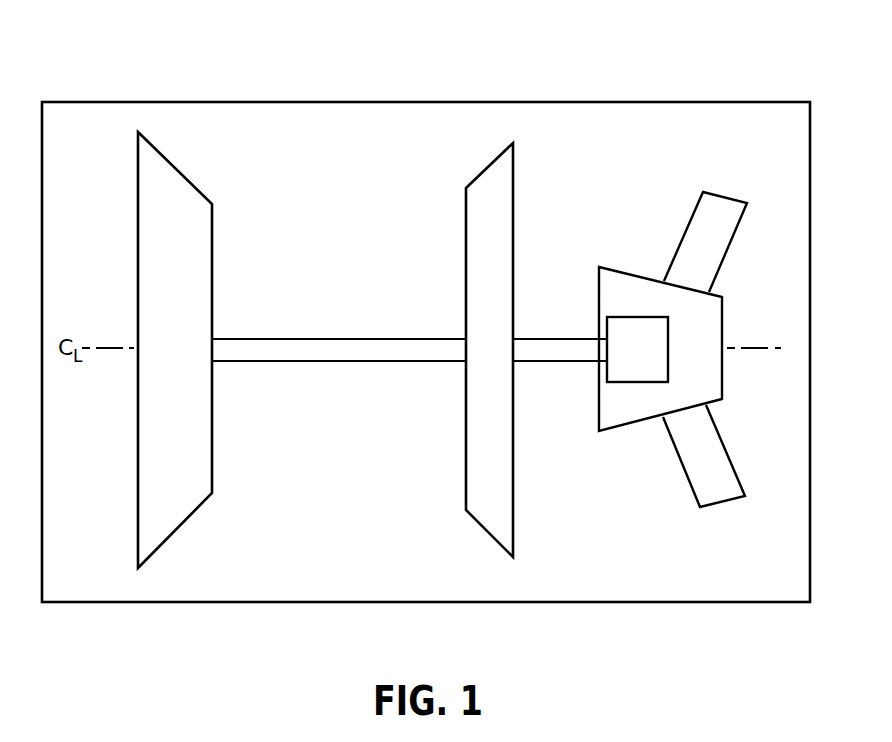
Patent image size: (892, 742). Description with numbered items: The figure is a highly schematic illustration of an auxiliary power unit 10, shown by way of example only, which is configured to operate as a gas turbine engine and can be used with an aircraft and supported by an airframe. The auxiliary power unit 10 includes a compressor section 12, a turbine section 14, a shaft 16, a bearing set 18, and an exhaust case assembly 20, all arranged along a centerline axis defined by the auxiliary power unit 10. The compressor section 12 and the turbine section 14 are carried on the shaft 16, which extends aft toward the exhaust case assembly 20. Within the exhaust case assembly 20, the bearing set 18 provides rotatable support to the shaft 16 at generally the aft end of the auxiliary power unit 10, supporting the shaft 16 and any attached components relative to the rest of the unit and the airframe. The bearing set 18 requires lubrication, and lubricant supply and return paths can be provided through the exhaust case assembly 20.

The auxiliary power unit 10 is at (425, 101).
The compressor section 12 is at (175, 167).
The turbine section 14 is at (485, 168).
The shaft 16 is at (347, 336).
The bearing set 18 is at (632, 327).
The exhaust case assembly 20 is at (722, 318).